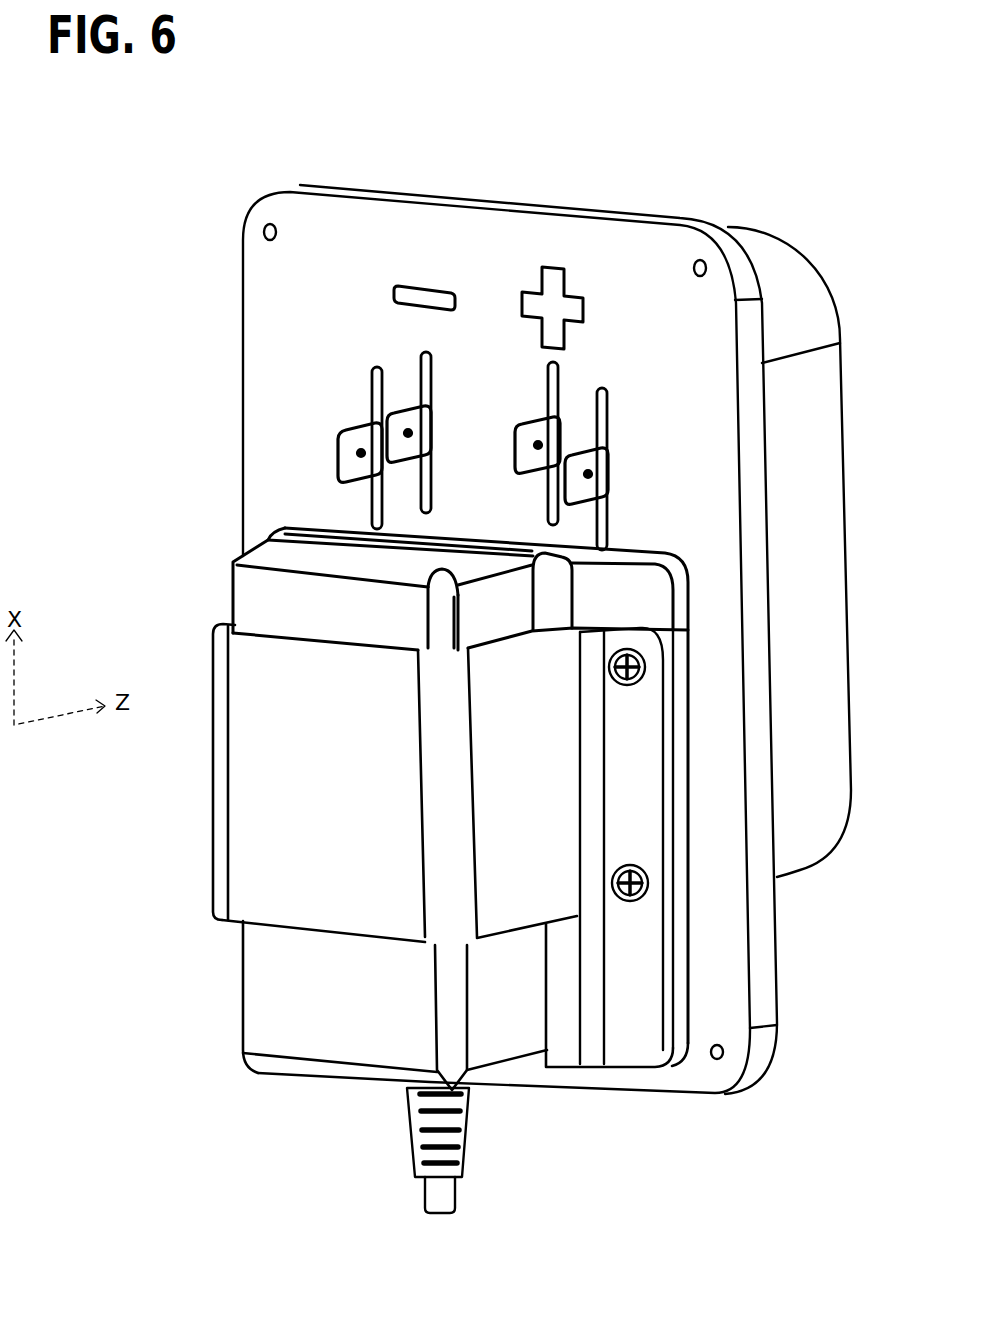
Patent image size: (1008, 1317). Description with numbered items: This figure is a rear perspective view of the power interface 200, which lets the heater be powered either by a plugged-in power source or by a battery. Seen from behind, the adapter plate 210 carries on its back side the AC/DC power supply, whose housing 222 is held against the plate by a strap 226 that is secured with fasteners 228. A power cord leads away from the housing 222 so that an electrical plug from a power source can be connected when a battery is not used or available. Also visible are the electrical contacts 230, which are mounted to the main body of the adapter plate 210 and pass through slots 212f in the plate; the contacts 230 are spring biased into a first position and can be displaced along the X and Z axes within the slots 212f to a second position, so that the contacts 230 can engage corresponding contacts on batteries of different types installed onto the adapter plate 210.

The power interface 200 is at (200, 208).
The adapter plate 210 is at (272, 328).
The slots 212f is at (368, 392).
The electrical contacts 230 is at (338, 448).
The strap 226 is at (228, 858).
The fasteners 228 is at (640, 898).
The housing 222 is at (490, 1072).